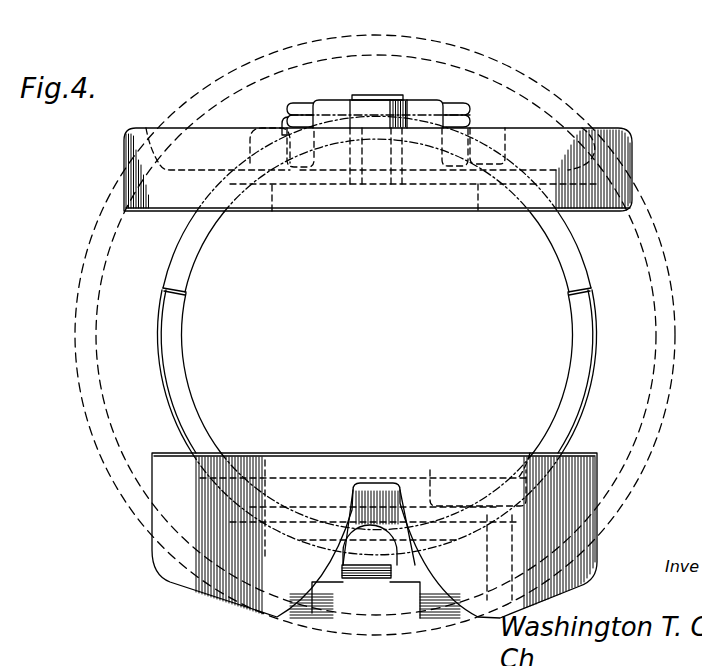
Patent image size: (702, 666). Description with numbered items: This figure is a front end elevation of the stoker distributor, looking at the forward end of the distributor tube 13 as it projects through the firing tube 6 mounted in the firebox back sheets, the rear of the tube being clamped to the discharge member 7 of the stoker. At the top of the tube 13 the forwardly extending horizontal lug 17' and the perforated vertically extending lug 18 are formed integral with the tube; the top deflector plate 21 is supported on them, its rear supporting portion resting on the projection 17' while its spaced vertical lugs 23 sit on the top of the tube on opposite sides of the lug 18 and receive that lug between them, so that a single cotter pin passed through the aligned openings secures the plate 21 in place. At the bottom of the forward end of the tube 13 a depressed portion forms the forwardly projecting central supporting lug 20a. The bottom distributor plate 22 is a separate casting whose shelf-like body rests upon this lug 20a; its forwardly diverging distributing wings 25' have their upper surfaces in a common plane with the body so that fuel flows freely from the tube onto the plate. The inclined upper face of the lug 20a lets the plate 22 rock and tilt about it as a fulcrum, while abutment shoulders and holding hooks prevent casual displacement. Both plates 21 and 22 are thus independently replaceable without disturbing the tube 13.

The firing tube 6 is at (100, 230).
The discharge member 7 is at (279, 640).
The distributor tube 13 is at (170, 319).
The horizontal lug 17' is at (378, 187).
The vertically extending lug 18 is at (383, 98).
The central supporting lug 20a is at (368, 562).
The top deflector plate 21 is at (518, 128).
The bottom distributor plate 22 is at (460, 483).
The vertical lugs 23 is at (430, 108).
The distributing wings 25' is at (373, 522).